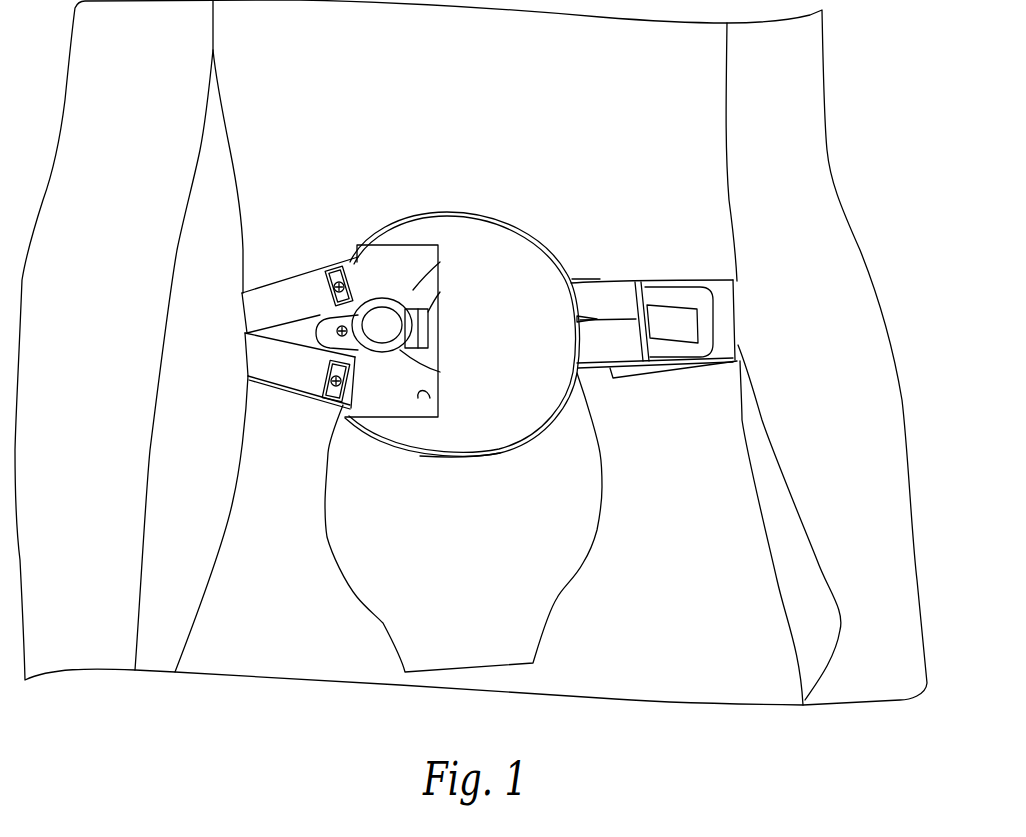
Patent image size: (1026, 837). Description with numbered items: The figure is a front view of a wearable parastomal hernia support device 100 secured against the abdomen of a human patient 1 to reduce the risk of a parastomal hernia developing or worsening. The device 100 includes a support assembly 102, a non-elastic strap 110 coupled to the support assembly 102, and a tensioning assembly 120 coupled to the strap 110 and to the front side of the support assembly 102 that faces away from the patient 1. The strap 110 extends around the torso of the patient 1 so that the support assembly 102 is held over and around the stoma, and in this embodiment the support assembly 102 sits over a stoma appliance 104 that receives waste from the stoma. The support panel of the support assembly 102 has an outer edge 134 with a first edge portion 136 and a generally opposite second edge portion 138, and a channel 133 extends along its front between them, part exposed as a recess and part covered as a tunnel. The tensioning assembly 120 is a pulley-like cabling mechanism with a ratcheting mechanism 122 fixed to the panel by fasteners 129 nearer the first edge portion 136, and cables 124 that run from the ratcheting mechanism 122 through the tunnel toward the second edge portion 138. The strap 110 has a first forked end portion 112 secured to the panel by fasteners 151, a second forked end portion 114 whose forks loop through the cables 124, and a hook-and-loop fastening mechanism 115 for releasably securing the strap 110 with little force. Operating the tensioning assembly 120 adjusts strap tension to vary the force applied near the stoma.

The patient 1 is at (82, 120).
The wearable parastomal hernia support device 100 is at (307, 98).
The support assembly 102 is at (534, 215).
The stoma appliance 104 is at (575, 552).
The non-elastic strap 110 is at (727, 308).
The first forked end portion 112 is at (280, 365).
The second forked end portion 114 is at (608, 298).
The hook-and-loop fastening mechanism 115 is at (667, 318).
The tensioning assembly 120 is at (401, 372).
The ratcheting mechanism 122 is at (382, 298).
The cables 124 is at (422, 308).
The fasteners 129 is at (343, 325).
The channel 133 is at (428, 398).
The outer edge 134 is at (483, 457).
The first edge portion 136 is at (308, 332).
The second edge portion 138 is at (596, 381).
The fasteners 151 is at (338, 266).